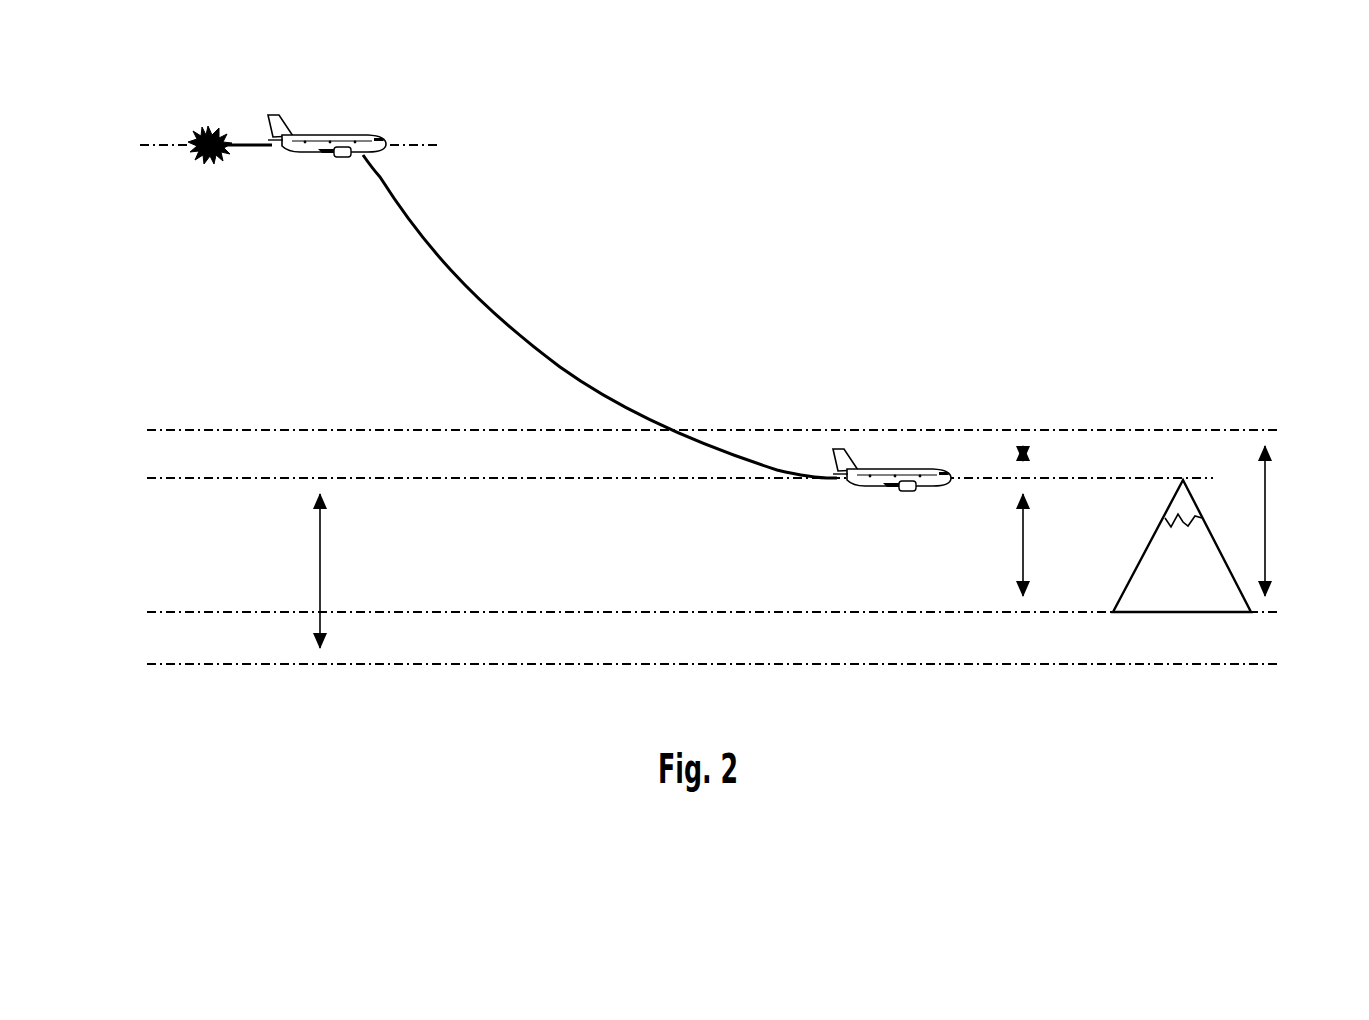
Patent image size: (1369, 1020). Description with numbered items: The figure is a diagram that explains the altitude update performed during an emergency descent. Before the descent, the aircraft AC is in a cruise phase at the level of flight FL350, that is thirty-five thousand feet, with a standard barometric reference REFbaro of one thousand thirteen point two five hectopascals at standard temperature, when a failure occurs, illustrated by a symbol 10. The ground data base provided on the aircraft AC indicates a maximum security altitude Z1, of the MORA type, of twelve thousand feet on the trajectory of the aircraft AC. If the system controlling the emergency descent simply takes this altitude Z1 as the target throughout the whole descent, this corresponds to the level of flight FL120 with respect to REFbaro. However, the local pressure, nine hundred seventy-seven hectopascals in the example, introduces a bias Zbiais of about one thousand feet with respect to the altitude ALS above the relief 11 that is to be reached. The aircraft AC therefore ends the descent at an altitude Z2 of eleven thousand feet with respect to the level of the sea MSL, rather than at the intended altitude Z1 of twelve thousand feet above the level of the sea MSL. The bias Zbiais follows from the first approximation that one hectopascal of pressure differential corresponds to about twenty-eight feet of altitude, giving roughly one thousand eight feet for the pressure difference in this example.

The symbol 10 is at (218, 128).
The relief 11 is at (1228, 558).
The aircraft AC is at (317, 153).
The maximum security altitude Z1 is at (320, 568).
The altitude Z2 is at (1023, 542).
The bias Zbiais is at (1027, 454).
The level of flight FL350 is at (260, 144).
The level of flight FL120 is at (647, 478).
The altitude ALS is at (689, 428).
The level of the sea MSL is at (687, 612).
The standard barometric reference REFbaro is at (666, 663).